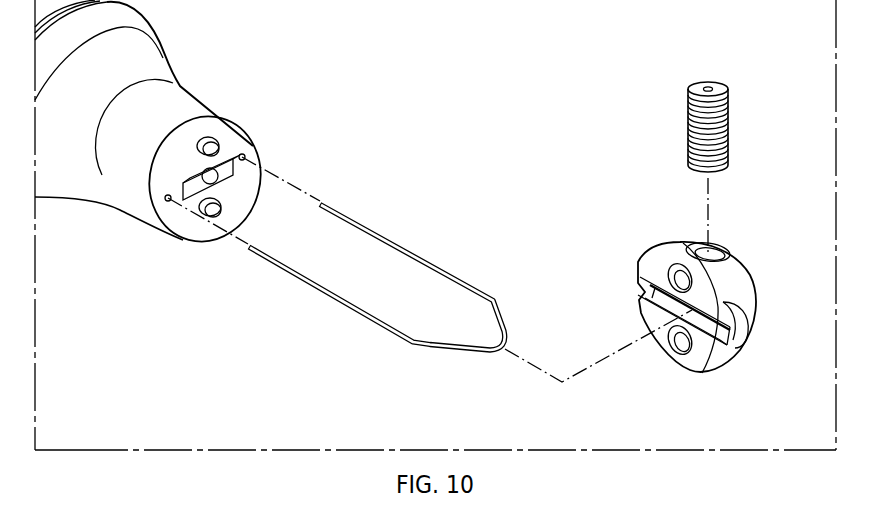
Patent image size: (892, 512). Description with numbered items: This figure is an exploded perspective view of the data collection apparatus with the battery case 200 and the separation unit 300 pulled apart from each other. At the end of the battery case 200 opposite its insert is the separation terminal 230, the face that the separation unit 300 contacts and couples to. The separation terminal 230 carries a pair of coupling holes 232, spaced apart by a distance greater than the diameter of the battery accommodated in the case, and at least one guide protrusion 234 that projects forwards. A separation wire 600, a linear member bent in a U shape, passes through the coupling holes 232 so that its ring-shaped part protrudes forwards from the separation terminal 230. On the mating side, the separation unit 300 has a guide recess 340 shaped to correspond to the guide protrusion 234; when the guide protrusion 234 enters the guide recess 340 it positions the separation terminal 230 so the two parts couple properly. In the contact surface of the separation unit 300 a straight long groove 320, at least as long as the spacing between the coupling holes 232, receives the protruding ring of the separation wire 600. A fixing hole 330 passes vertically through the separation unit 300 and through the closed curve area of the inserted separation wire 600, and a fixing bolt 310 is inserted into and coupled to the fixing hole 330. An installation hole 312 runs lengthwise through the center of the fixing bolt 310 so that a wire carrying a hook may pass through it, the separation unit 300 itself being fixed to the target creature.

The battery case 200 is at (145, 67).
The separation terminal 230 is at (240, 132).
The coupling holes 232 is at (246, 157).
The guide protrusions 234 is at (210, 152).
The separation wire 600 is at (353, 218).
The separation unit 300 is at (737, 280).
The fixing bolt 310 is at (717, 83).
The installation hole 312 is at (707, 87).
The long groove 320 is at (692, 317).
The fixing hole 330 is at (718, 247).
The guide recess 340 is at (647, 290).